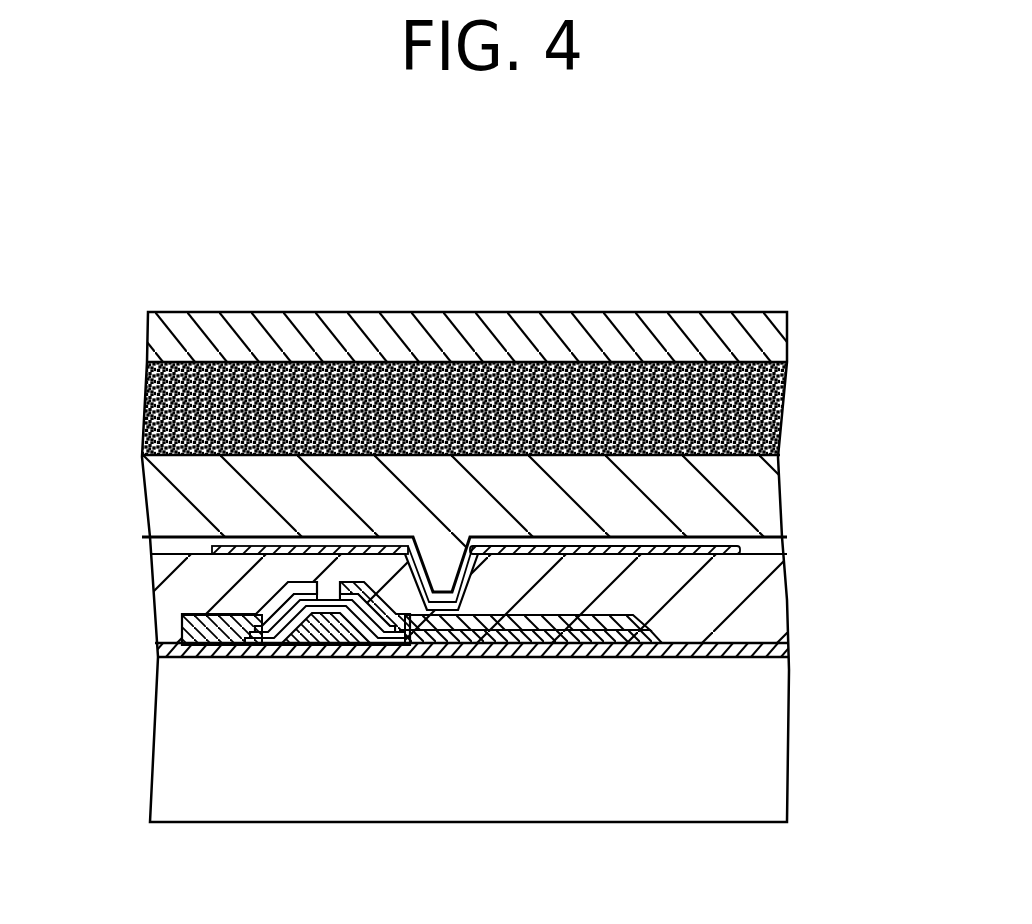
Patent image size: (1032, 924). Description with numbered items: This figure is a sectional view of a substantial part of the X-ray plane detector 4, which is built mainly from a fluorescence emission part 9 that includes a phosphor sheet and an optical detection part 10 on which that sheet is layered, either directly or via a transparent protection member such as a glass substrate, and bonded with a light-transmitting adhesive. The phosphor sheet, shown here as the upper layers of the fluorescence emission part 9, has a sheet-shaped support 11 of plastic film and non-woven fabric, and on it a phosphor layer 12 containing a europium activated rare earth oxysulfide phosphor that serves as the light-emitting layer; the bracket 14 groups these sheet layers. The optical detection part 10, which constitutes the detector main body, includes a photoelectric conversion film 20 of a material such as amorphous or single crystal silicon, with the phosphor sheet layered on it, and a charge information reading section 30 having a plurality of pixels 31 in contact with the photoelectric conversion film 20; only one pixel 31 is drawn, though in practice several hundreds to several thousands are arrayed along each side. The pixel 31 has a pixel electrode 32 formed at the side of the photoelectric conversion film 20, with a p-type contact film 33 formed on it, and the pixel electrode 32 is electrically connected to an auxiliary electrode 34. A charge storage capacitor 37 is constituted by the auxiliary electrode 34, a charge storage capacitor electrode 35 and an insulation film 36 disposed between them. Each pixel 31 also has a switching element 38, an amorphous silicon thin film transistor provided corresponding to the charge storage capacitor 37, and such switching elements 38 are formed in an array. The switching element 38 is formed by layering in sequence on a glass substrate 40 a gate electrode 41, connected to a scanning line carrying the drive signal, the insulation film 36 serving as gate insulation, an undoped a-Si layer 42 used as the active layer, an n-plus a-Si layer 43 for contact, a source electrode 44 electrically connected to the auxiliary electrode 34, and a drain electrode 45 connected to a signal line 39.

The X-ray plane detector 4 is at (670, 266).
The fluorescence emission part 9 is at (83, 313).
The optical detection part 10 is at (83, 452).
The sheet-shaped support 11 is at (773, 342).
The phosphor layer 12 is at (773, 400).
The counter substrate assembly 14 is at (867, 307).
The photoelectric conversion film 20 is at (762, 490).
The charge information reading section 30 is at (832, 540).
The pixel 31 is at (753, 747).
The pixel electrode 32 is at (228, 537).
The p-type contact film 33 is at (165, 548).
The auxiliary electrode 34 is at (519, 655).
The charge storage capacitor electrode 35 is at (565, 655).
The insulation film 36 is at (158, 652).
The charge storage capacitor 37 is at (642, 717).
The switching element 38 is at (328, 665).
The signal line 39 is at (185, 627).
The glass substrate 40 is at (779, 706).
The gate electrode 41 is at (357, 660).
The undoped a-Si layer 42 is at (255, 660).
The n+ a-Si layer 43 is at (222, 650).
The source electrode 44 is at (410, 660).
The drain electrode 45 is at (287, 598).